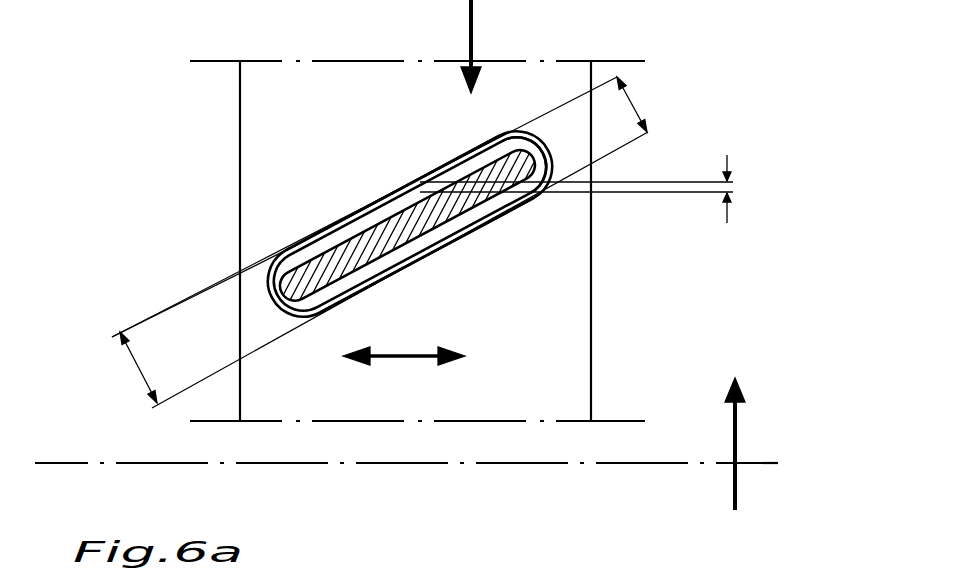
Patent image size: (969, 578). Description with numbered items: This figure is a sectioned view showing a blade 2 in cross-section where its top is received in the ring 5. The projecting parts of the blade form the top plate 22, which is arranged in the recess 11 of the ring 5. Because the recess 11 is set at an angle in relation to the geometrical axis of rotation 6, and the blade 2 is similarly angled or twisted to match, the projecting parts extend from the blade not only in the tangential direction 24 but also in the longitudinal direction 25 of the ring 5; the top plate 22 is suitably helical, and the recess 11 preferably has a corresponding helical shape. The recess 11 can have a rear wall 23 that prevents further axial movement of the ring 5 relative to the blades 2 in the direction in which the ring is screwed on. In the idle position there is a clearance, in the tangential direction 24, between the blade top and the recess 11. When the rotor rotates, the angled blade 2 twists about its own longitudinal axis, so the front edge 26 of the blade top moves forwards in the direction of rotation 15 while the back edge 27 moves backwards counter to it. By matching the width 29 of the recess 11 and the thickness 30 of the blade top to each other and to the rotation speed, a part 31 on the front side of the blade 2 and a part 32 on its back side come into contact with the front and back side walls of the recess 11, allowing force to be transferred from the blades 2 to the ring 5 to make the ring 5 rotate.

The blade 2 is at (455, 172).
The ring 5 is at (543, 316).
The geometrical axis of rotation 6 is at (685, 464).
The recess 11 is at (262, 318).
The direction of rotation 15 is at (738, 437).
The top plate 22 is at (330, 238).
The rear wall 23 is at (552, 150).
The tangential direction 24 is at (476, 34).
The longitudinal direction 25 is at (388, 362).
The front edge 26 is at (378, 198).
The back edge 27 is at (445, 248).
The width of the recess 29 is at (126, 366).
The thickness of the blade top 30 is at (642, 99).
The part on the front side of the blade 31 is at (268, 255).
The part on the back side of the blade 32 is at (540, 202).